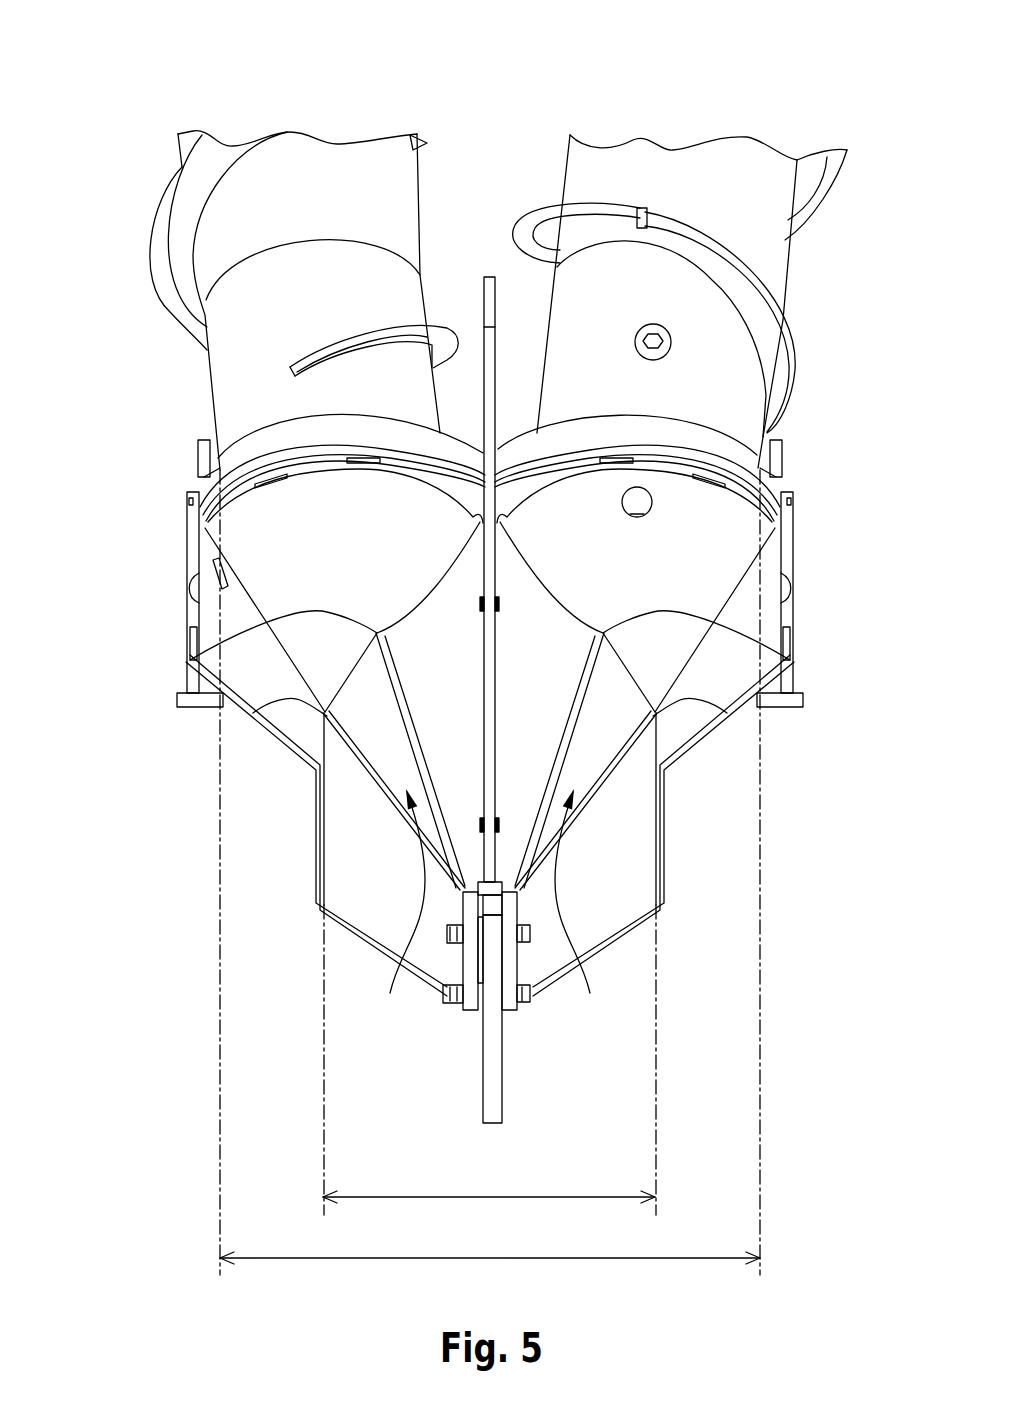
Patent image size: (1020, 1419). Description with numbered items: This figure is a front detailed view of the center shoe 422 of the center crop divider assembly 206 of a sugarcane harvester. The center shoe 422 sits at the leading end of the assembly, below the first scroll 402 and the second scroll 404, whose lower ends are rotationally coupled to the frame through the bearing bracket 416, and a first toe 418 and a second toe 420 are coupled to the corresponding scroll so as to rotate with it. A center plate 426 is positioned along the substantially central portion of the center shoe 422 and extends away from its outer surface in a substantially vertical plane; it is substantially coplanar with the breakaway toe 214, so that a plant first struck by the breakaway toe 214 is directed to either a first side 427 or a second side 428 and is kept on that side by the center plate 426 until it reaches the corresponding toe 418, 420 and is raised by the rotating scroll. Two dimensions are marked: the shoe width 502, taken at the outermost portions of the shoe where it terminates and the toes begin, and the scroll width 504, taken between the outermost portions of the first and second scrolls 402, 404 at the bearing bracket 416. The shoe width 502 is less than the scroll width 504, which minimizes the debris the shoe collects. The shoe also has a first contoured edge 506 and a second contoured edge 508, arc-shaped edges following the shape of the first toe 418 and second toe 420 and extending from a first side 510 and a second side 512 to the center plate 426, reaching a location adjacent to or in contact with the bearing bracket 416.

The center crop divider assembly 206 is at (268, 118).
The breakaway toe 214 is at (493, 1102).
The first scroll 402 is at (700, 315).
The second scroll 404 is at (222, 368).
The bearing bracket 416 is at (713, 452).
The first toe 418 is at (700, 565).
The second toe 420 is at (258, 537).
The center shoe 422 is at (527, 743).
The center plate 426 is at (490, 277).
The first side 427 is at (584, 913).
The second side 428 is at (396, 913).
The shoe width 502 is at (508, 1197).
The scroll width 504 is at (380, 1258).
The first contoured edge 506 is at (783, 661).
The second contoured edge 508 is at (192, 660).
The first side 510 is at (727, 713).
The second side 512 is at (255, 713).